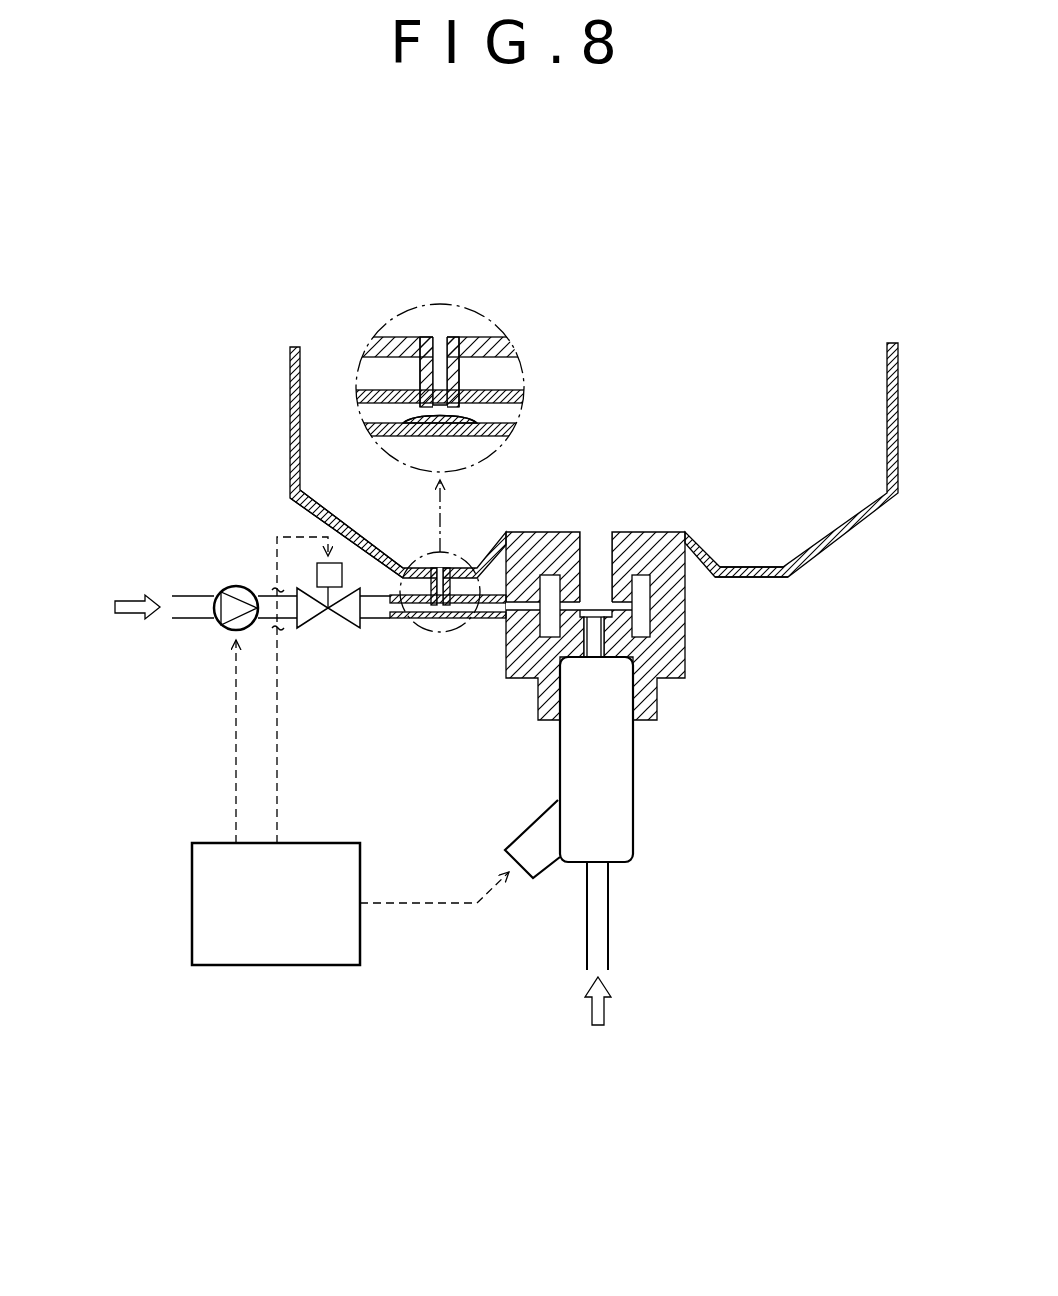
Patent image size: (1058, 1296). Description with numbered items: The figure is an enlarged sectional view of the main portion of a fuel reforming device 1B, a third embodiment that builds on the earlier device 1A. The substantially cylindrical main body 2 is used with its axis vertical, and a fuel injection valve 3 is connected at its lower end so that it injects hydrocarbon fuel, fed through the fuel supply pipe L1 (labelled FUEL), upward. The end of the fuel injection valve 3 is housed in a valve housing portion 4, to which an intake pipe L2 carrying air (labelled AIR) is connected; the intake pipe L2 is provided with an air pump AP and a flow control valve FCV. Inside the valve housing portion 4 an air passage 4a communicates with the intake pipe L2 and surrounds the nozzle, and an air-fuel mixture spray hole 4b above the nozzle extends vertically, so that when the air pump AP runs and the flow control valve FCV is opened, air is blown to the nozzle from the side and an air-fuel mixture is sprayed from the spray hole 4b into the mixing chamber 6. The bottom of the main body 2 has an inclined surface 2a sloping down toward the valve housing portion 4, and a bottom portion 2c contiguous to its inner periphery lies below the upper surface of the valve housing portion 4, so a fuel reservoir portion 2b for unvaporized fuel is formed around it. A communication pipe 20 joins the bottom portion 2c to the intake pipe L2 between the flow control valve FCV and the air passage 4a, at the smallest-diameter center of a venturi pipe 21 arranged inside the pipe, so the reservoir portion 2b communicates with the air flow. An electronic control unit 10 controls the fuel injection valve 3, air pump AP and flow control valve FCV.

The fuel reforming device 1A is at (795, 352).
The fuel reforming device 1B is at (358, 1018).
The main body 2 is at (898, 408).
The inclined surface 2a is at (303, 496).
The fuel reservoir portion 2b is at (737, 562).
The bottom portion 2c is at (478, 340).
The fuel injection valve 3 is at (625, 800).
The valve housing portion 4 is at (517, 680).
The air passage 4a is at (640, 605).
The air-fuel mixture spray hole 4b is at (591, 542).
The mixing chamber 6 is at (686, 396).
The electronic control unit 10 is at (192, 900).
The communication pipe 20 is at (462, 372).
The venturi pipe 21 is at (465, 416).
The fuel supply pipe L1 is at (587, 945).
The intake pipe L2 is at (478, 432).
The air pump AP is at (238, 588).
The flow control valve FCV is at (340, 622).
The air flow AIR is at (112, 610).
The fuel flow FUEL is at (599, 1018).